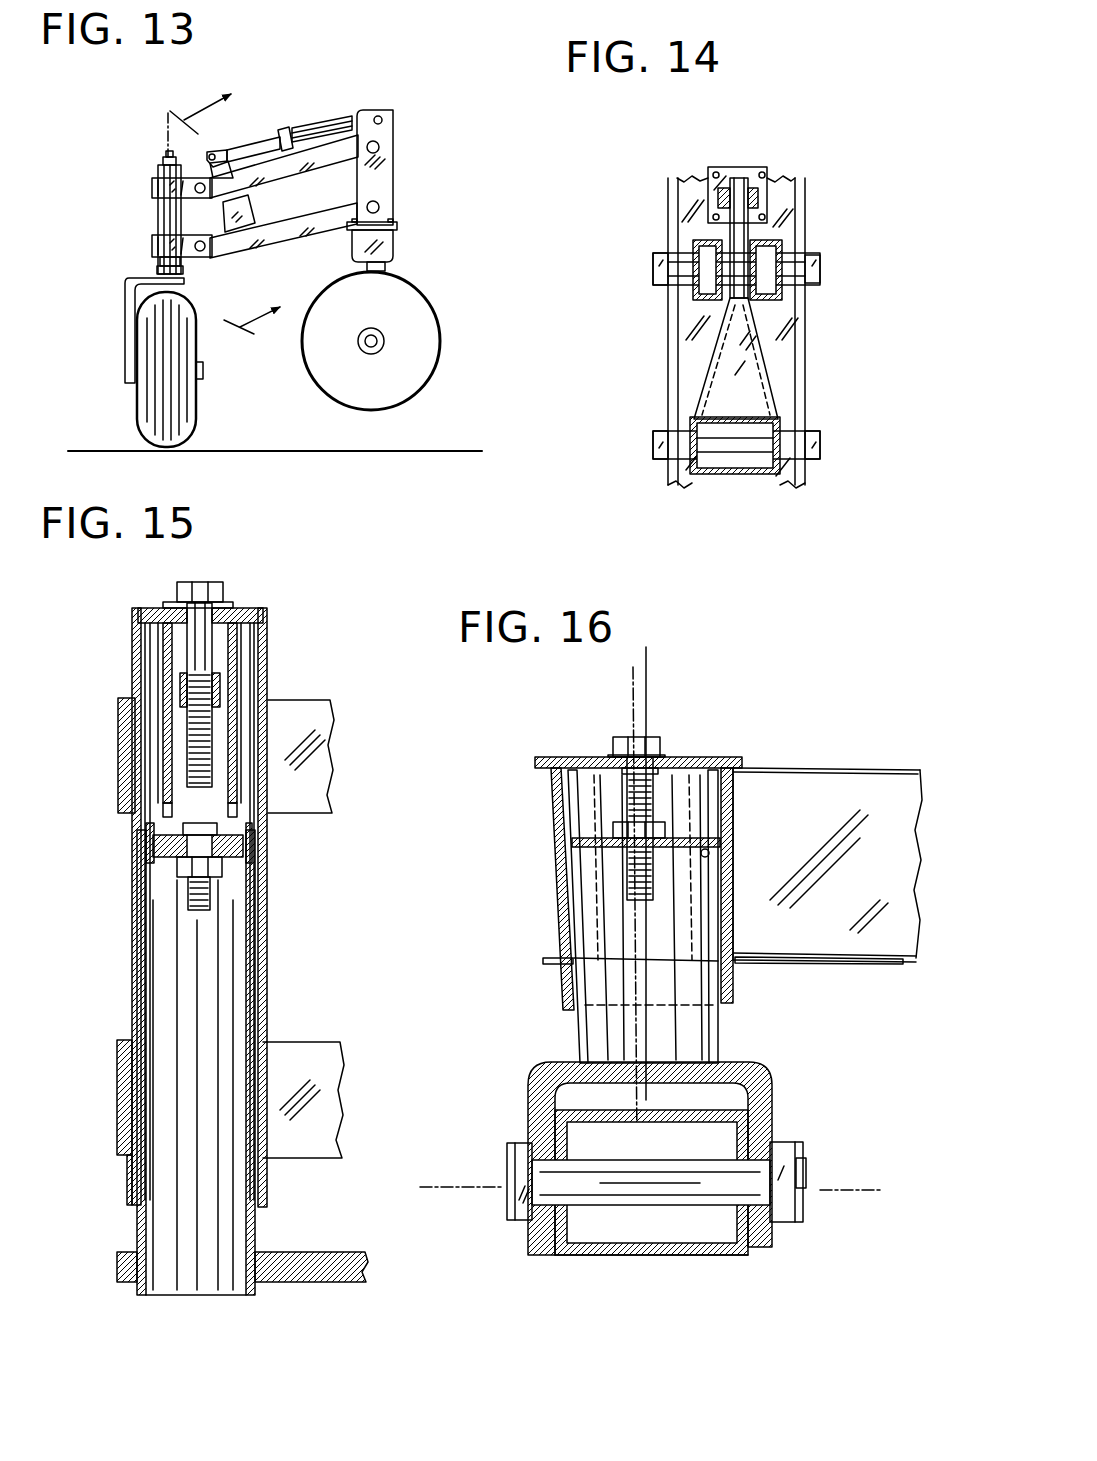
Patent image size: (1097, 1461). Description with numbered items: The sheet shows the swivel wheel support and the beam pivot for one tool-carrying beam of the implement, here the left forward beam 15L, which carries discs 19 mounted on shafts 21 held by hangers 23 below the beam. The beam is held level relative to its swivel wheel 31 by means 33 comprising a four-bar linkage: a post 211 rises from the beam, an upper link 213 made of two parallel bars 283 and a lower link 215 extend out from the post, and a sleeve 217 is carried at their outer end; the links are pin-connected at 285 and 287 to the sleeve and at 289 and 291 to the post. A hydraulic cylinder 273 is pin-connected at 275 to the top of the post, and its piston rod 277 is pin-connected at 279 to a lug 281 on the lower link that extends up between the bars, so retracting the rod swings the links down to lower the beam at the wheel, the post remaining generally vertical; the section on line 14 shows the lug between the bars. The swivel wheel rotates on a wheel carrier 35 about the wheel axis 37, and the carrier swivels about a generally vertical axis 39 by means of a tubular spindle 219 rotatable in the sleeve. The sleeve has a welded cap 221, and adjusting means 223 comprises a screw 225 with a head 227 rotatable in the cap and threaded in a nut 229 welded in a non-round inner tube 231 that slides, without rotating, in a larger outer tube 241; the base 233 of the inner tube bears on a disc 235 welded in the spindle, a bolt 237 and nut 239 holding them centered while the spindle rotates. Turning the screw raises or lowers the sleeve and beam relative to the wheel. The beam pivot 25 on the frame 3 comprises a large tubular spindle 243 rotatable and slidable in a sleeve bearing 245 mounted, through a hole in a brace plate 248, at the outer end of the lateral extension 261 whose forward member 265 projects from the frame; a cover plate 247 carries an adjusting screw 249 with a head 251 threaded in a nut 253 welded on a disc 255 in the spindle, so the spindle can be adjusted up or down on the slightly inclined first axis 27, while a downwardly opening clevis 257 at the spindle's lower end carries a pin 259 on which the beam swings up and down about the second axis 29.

In FIG. 16, the frame 3 is at (862, 770).
In FIG. 13, the section line 14— 14 is at (219, 212).
In FIG. 13, the left forward tool-carrying beam 15L is at (397, 240).
In FIG. 16, the left forward tool-carrying beam 15L is at (637, 1258).
In FIG. 13, the discs 19 is at (415, 376).
In FIG. 13, the shafts 21 is at (364, 348).
In FIG. 13, the hangers 23 is at (385, 268).
In FIG. 16, the pivot 25 is at (533, 756).
In FIG. 16, the first axis 27 is at (630, 697).
In FIG. 16, the second axis 29 is at (445, 1190).
In FIG. 13, the swivel wheel 31 is at (160, 437).
In FIG. 13, the means for raising and lowering the beam 33 is at (307, 124).
In FIG. 13, the swivel wheel carrier 35 is at (125, 296).
In FIG. 13, the wheel axis 37 is at (203, 372).
In FIG. 13, the generally vertical swivel axis 39 is at (168, 120).
In FIG. 13, the post 211 is at (383, 113).
In FIG. 14, the post 211 is at (801, 395).
In FIG. 13, the upper link 213 is at (328, 166).
In FIG. 14, the upper link 213 is at (688, 298).
In FIG. 13, the lower link 215 is at (290, 245).
In FIG. 14, the lower link 215 is at (717, 465).
In FIG. 13, the sleeve 217 is at (160, 210).
In FIG. 15, the sleeve 217 is at (133, 975).
In FIG. 13, the tubular spindle 219 is at (162, 268).
In FIG. 15, the tubular spindle 219 is at (137, 1227).
In FIG. 15, the cap 221 is at (150, 608).
In FIG. 15, the adjusting means 223 is at (234, 581).
In FIG. 15, the adjusting screw 225 is at (195, 775).
In FIG. 15, the screw head 227 is at (183, 588).
In FIG. 15, the nut 229 is at (224, 676).
In FIG. 15, the inner tube 231 is at (263, 810).
In FIG. 15, the base 233 is at (243, 845).
In FIG. 15, the disc 235 is at (163, 863).
In FIG. 15, the bolt 237 is at (205, 905).
In FIG. 15, the nut 239 is at (222, 870).
In FIG. 15, the outer tube 241 is at (165, 665).
In FIG. 16, the tubular spindle 243 is at (727, 1040).
In FIG. 16, the sleeve bearing 245 is at (562, 990).
In FIG. 16, the cover plate 247 is at (735, 757).
In FIG. 16, the brace plate 248 is at (543, 961).
In FIG. 16, the adjusting screw 249 is at (627, 895).
In FIG. 16, the screw head 251 is at (656, 740).
In FIG. 16, the nut 253 is at (572, 842).
In FIG. 16, the nut 255 is at (710, 852).
In FIG. 16, the clevis 257 is at (772, 1115).
In FIG. 16, the pin 259 is at (667, 1200).
In FIG. 16, the lateral extension 261 is at (862, 968).
In FIG. 16, the forward member 265 is at (782, 960).
In FIG. 13, the hydraulic cylinder 273 is at (325, 120).
In FIG. 14, the hydraulic cylinder 273 is at (763, 168).
In FIG. 13, the pin connection 275 is at (382, 120).
In FIG. 13, the piston rod 277 is at (255, 145).
In FIG. 13, the pin connection 279 is at (212, 150).
In FIG. 14, the pin connection 279 is at (760, 200).
In FIG. 13, the lug 281 is at (255, 210).
In FIG. 14, the lug 281 is at (770, 378).
In FIG. 14, the parallel bars 283 is at (700, 250).
In FIG. 13, the pin connection 285 is at (168, 204).
In FIG. 13, the pin connection 287 is at (197, 252).
In FIG. 13, the pin connection 289 is at (379, 147).
In FIG. 13, the pin connection 291 is at (379, 207).